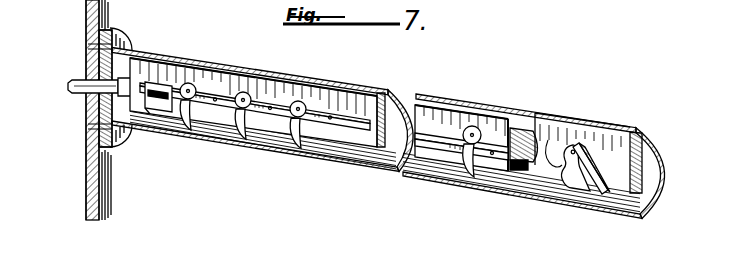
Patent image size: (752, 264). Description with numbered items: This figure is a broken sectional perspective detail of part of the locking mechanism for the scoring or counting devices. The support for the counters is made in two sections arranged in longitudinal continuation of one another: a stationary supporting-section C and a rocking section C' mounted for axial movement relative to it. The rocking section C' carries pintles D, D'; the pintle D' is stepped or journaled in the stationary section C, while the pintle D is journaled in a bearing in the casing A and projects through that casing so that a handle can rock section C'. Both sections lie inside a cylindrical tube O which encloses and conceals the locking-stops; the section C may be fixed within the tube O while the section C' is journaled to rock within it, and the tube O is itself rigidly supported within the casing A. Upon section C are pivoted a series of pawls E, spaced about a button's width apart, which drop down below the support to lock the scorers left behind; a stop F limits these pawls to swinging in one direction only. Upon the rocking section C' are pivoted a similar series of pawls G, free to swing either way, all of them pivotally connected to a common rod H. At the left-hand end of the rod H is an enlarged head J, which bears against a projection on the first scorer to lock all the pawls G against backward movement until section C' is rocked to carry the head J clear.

The casing A is at (87, 197).
The tube O is at (138, 55).
The pintle D is at (86, 116).
The stationary supporting-section C is at (388, 133).
The rocking supporting-section C' is at (319, 108).
The rod H is at (265, 97).
The enlarged head J is at (165, 107).
The pivoted pawls G is at (297, 158).
The pintle D' is at (510, 179).
The stop F is at (550, 140).
The pivoted pawls E is at (585, 157).